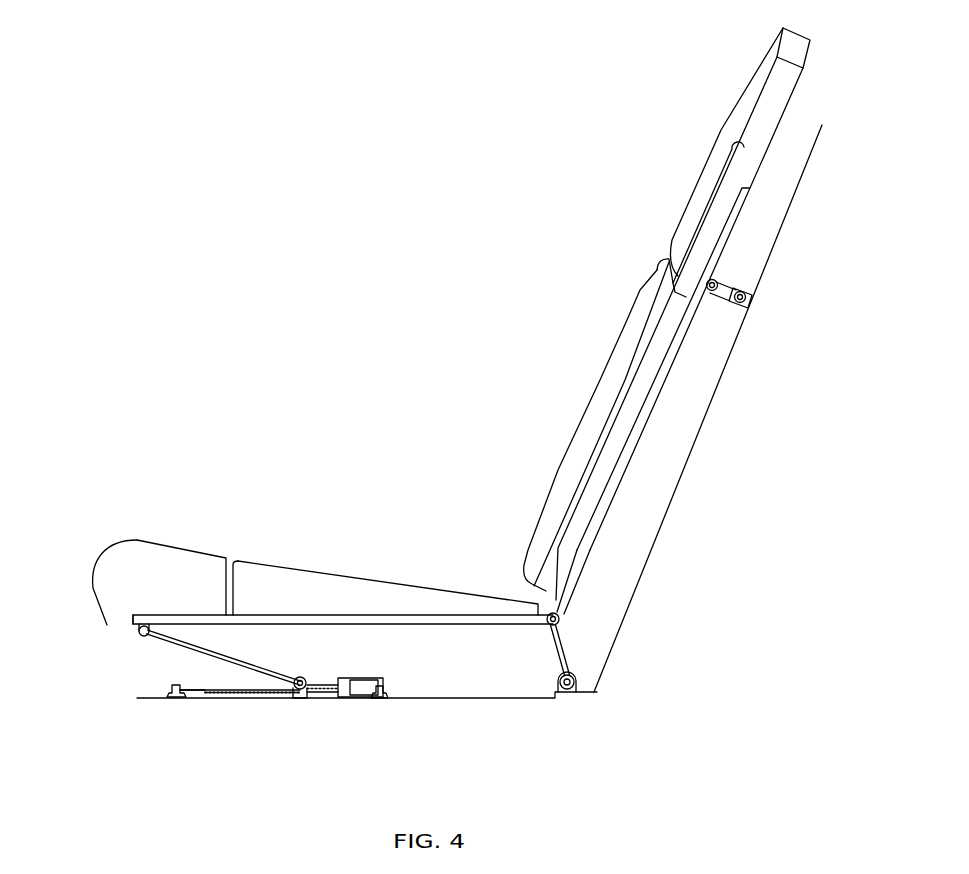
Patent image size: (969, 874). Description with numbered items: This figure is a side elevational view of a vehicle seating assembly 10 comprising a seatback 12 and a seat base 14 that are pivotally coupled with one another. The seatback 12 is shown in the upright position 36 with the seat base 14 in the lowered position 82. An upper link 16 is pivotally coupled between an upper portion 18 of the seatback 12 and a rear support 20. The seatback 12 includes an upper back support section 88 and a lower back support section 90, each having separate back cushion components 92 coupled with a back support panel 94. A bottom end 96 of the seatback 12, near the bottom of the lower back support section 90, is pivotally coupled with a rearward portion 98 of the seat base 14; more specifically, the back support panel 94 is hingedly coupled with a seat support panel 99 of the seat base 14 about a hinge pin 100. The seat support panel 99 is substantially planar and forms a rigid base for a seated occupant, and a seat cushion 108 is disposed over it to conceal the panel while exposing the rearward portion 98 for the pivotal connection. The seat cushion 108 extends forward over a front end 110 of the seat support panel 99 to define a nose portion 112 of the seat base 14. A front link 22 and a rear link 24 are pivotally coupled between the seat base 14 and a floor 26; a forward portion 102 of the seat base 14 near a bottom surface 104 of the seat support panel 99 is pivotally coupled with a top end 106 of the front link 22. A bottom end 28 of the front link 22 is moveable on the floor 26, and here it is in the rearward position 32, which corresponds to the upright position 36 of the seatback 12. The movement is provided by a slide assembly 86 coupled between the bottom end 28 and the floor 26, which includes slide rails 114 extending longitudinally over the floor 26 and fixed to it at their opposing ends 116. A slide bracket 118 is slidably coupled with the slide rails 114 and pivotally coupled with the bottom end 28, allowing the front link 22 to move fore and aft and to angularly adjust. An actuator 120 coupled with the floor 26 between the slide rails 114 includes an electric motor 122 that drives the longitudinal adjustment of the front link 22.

The vehicle seating assembly 10 is at (348, 122).
The seatback 12 is at (560, 290).
The seat base 14 is at (352, 481).
The upper link 16 is at (733, 285).
The upper portion 18 is at (752, 222).
The rear support 20 is at (737, 351).
The front link 22 is at (163, 641).
The rear link 24 is at (568, 655).
The floor 26 is at (470, 700).
The bottom end 28 is at (263, 680).
The rearward position 32 is at (186, 667).
The upright position 36 is at (552, 415).
The lowered position 82 is at (107, 540).
The slide assembly 86 is at (297, 706).
The upper back support section 88 is at (745, 102).
The lower back support section 90 is at (608, 383).
The back cushion components 92 is at (687, 215).
The back support panel 94 is at (637, 447).
The bottom end 96 is at (579, 605).
The rearward portion 98 is at (533, 650).
The seat support panel 99 is at (468, 620).
The hinge pin 100 is at (560, 619).
The forward portion 102 is at (182, 520).
The bottom surface 104 is at (225, 577).
The top end 106 is at (133, 634).
The seat cushion 108 is at (262, 583).
The front end 110 is at (134, 606).
The nose portion 112 is at (112, 582).
The slide rails 114 is at (196, 692).
The opposing ends 116 is at (172, 691).
The slide bracket 118 is at (303, 672).
The actuator 120 is at (345, 656).
The electric motor 122 is at (366, 678).